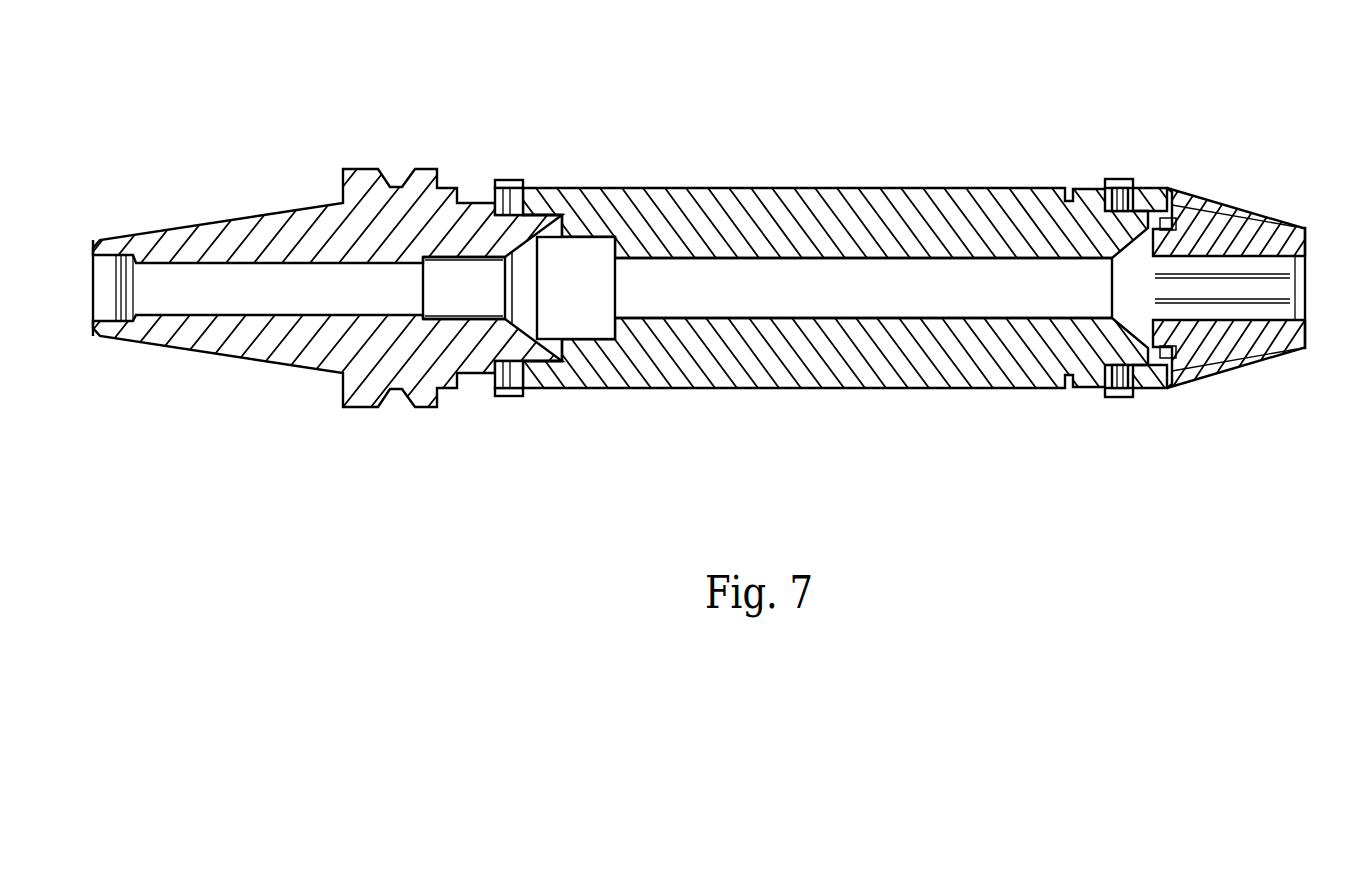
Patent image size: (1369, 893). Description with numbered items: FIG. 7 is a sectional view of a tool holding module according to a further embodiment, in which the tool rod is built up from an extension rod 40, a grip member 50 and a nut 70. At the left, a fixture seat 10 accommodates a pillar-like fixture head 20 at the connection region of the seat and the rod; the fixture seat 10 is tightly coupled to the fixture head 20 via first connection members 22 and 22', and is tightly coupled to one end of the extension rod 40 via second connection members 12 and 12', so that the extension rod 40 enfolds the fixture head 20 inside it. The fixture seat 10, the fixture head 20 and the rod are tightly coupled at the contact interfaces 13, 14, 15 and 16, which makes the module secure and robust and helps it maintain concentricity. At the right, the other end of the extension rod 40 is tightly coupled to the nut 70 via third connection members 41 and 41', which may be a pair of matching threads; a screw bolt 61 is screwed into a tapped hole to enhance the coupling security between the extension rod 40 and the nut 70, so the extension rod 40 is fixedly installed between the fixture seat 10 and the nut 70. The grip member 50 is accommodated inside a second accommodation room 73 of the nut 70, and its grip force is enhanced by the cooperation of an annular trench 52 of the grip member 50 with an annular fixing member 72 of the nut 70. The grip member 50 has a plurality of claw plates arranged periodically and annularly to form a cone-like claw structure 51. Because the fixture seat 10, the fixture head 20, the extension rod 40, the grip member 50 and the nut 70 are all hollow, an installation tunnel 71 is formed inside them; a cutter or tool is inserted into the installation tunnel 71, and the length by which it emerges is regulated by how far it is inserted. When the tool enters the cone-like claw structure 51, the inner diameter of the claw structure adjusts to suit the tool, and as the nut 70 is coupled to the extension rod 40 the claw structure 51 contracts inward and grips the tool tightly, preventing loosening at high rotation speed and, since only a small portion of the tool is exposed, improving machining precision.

The fixture seat 10 is at (183, 221).
The second connection member 12 is at (536, 152).
The second connection member 12' is at (506, 374).
The contact interface 13 is at (515, 132).
The contact interface 14 is at (573, 210).
The contact interface 15 is at (597, 355).
The contact interface 16 is at (516, 402).
The fixture head 20 is at (612, 310).
The first connection member 22 is at (464, 397).
The first connection member 22' is at (456, 212).
The extension rod 40 is at (762, 183).
The third connection member 41 is at (1097, 343).
The third connection member 41' is at (1150, 199).
The grip member 50 is at (1160, 224).
The cone-like claw structure 51 is at (1277, 291).
The annular trench 52 is at (1205, 333).
The screw bolt 61 is at (1112, 177).
The nut 70 is at (1242, 285).
The installation tunnel 71 is at (1308, 257).
The annular fixing member 72 is at (1176, 360).
The second accommodation room 73 is at (1237, 222).